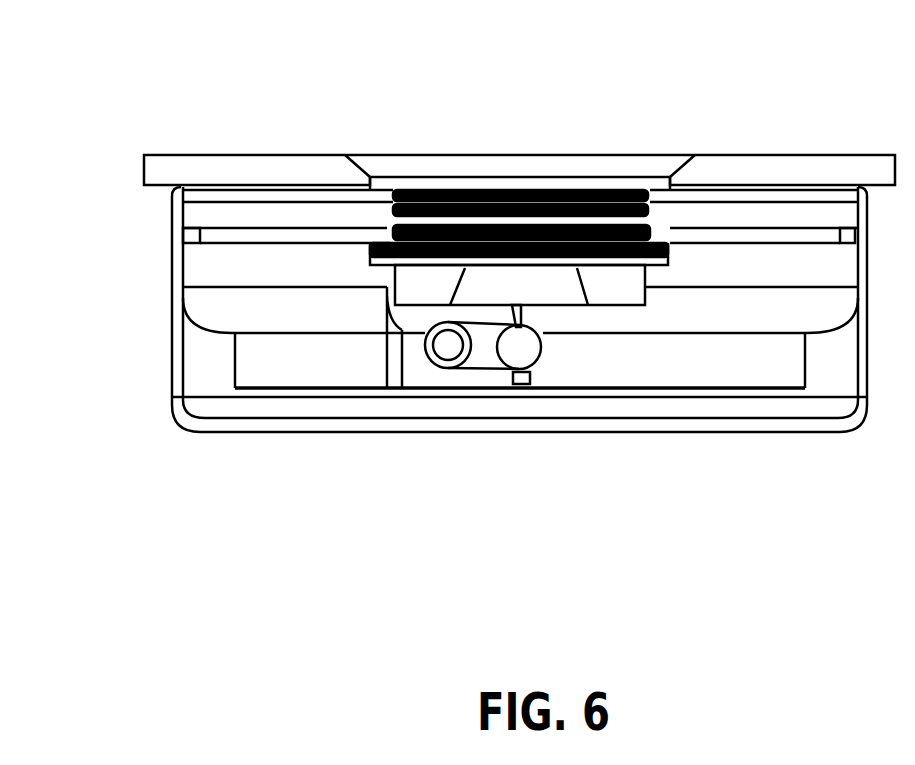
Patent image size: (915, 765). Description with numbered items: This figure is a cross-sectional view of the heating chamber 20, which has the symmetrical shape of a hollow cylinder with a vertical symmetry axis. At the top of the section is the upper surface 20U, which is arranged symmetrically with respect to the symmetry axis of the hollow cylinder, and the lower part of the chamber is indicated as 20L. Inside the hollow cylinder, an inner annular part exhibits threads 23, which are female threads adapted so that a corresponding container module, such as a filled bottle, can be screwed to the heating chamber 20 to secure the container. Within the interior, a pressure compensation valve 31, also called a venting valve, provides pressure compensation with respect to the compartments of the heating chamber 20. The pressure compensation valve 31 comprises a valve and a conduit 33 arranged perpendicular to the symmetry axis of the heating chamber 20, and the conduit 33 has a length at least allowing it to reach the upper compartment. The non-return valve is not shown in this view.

The heating chamber 20 is at (93, 64).
The upper surface 20U is at (230, 155).
The lower housing 20L is at (702, 432).
The threads 23 is at (670, 223).
The pressure compensation valve 31 is at (435, 363).
The conduit 33 is at (490, 382).